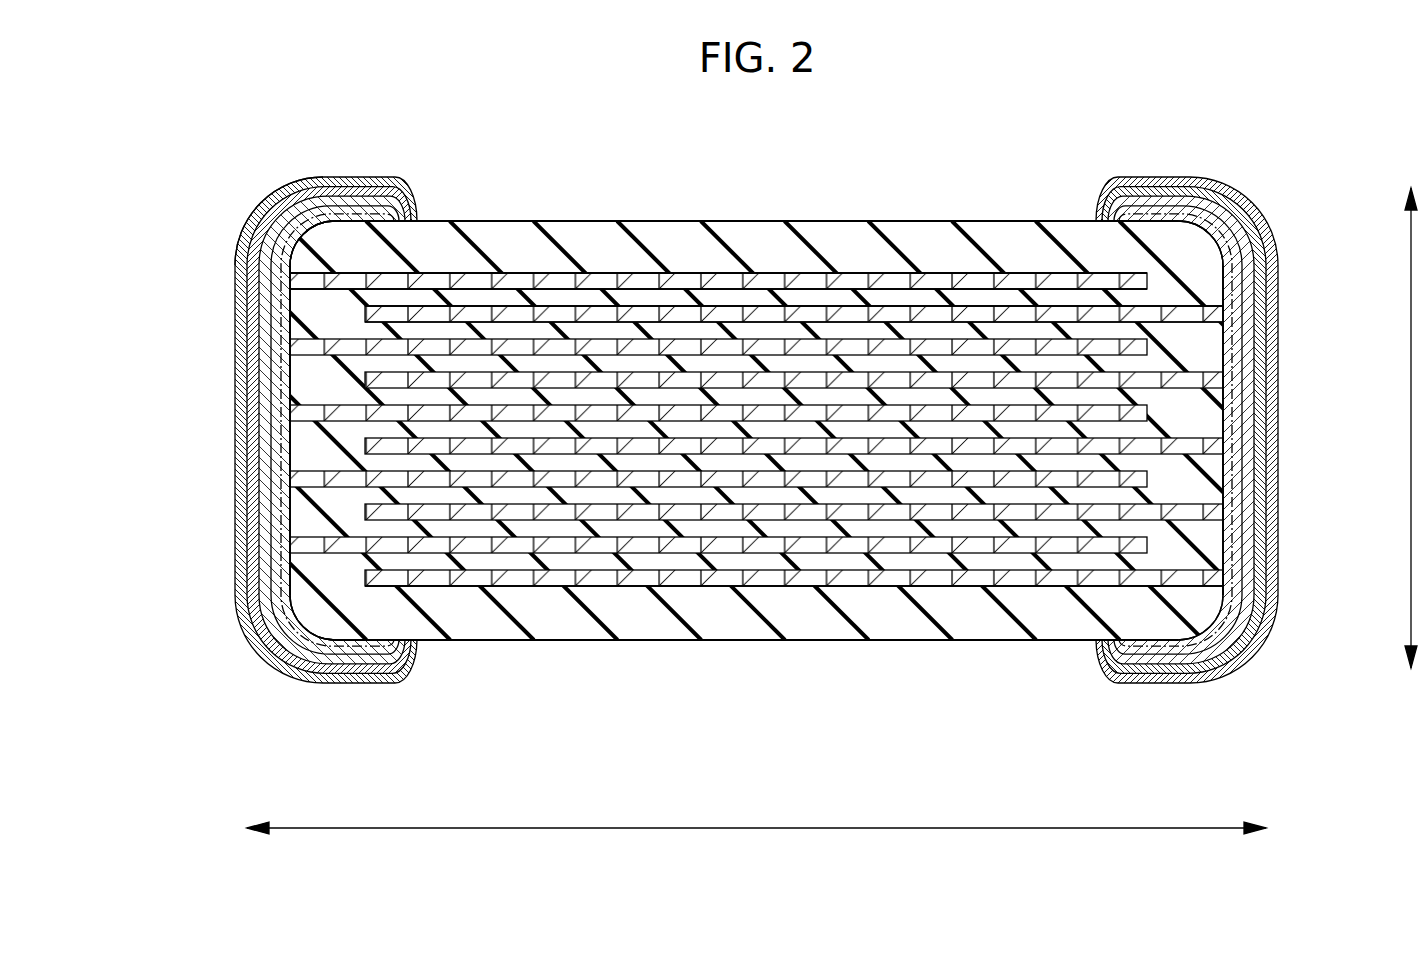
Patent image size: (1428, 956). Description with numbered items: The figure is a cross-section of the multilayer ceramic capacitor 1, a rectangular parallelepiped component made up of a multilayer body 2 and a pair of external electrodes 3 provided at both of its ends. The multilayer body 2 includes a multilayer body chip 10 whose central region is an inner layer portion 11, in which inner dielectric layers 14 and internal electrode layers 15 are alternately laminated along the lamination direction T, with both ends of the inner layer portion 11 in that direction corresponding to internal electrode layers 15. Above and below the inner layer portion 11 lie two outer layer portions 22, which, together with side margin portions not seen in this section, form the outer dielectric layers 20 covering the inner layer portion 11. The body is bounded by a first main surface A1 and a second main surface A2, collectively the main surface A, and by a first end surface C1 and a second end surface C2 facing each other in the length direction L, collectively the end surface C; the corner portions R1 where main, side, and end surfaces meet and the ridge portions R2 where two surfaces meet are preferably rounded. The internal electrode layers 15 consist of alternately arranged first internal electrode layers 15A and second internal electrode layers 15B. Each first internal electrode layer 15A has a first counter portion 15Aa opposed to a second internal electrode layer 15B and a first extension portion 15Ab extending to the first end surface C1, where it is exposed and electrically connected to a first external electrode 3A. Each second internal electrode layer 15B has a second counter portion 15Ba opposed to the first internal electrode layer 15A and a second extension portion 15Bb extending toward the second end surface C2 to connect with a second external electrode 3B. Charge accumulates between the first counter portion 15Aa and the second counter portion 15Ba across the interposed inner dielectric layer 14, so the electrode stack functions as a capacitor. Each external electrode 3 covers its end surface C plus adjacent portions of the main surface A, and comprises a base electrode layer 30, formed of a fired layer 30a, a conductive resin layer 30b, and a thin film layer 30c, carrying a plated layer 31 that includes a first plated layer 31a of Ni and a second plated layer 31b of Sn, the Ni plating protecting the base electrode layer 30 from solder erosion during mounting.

The multilayer ceramic capacitor 1 is at (1193, 150).
The multilayer body 2 is at (968, 205).
The multilayer body chip 10 is at (583, 220).
The inner layer portion 11 is at (235, 585).
The inner dielectric layer 14 is at (312, 307).
The internal electrode layer 15 is at (172, 310).
The first internal electrode layer 15A is at (300, 348).
The second internal electrode layer 15B is at (373, 382).
The first counter portion 15Aa is at (434, 283).
The first extension portion 15Ab is at (352, 280).
The second counter portion 15Ba is at (1067, 313).
The second extension portion 15Bb is at (1187, 313).
The outer dielectric layers 20 is at (740, 620).
The outer layer portion 22 is at (740, 240).
The first main surface A1 is at (887, 220).
The second main surface A2 is at (882, 643).
The main surface A is at (756, 430).
The first end surface C1 is at (290, 513).
The second end surface C2 is at (1225, 545).
The end surface C is at (756, 430).
The corner portion R1 is at (502, 220).
The ridge portion R2 is at (283, 195).
The external electrode 3 is at (736, 516).
The first external electrode 3A is at (135, 745).
The second external electrode 3B is at (1300, 440).
The base electrode layer 30 is at (268, 802).
The fired layer 30a is at (345, 652).
The conductive resin layer 30b is at (312, 657).
The thin film layer 30c is at (283, 660).
The plated layer 31 is at (170, 633).
The first plated layer 31a is at (265, 640).
The second plated layer 31b is at (262, 612).
The length direction L is at (756, 843).
The lamination direction T is at (1416, 428).